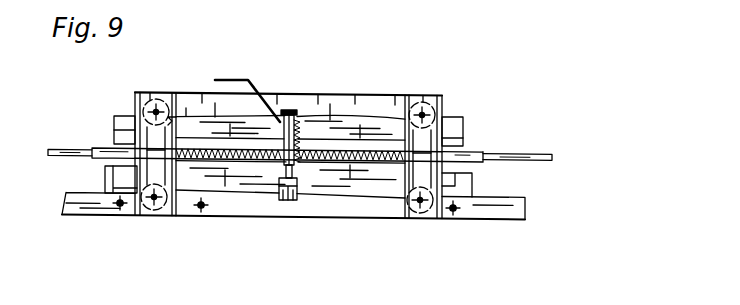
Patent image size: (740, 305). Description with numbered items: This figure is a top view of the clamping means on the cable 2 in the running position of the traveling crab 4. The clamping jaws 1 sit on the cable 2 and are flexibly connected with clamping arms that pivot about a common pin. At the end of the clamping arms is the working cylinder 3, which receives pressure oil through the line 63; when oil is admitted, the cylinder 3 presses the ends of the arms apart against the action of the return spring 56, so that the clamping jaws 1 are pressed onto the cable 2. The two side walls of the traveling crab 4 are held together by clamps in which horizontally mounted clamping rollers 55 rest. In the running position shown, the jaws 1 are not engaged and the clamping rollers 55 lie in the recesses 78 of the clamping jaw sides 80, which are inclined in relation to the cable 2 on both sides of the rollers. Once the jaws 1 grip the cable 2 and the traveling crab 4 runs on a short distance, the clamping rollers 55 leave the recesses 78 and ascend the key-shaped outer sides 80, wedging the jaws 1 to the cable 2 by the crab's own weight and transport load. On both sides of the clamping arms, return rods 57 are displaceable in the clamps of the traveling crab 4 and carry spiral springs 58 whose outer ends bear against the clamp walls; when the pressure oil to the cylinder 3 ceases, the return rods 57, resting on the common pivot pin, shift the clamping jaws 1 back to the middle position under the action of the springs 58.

The clamping jaws 1 is at (313, 168).
The cable 2 is at (505, 157).
The working cylinder 3 is at (287, 180).
The traveling crab 4 is at (498, 210).
The clamping rollers 55 is at (162, 207).
The return spring 56 is at (297, 198).
The return rods 57 is at (368, 153).
The spiral springs 58 is at (342, 153).
The line 63 is at (249, 79).
The recesses 78 is at (170, 123).
The clamping jaw sides 80 is at (125, 212).